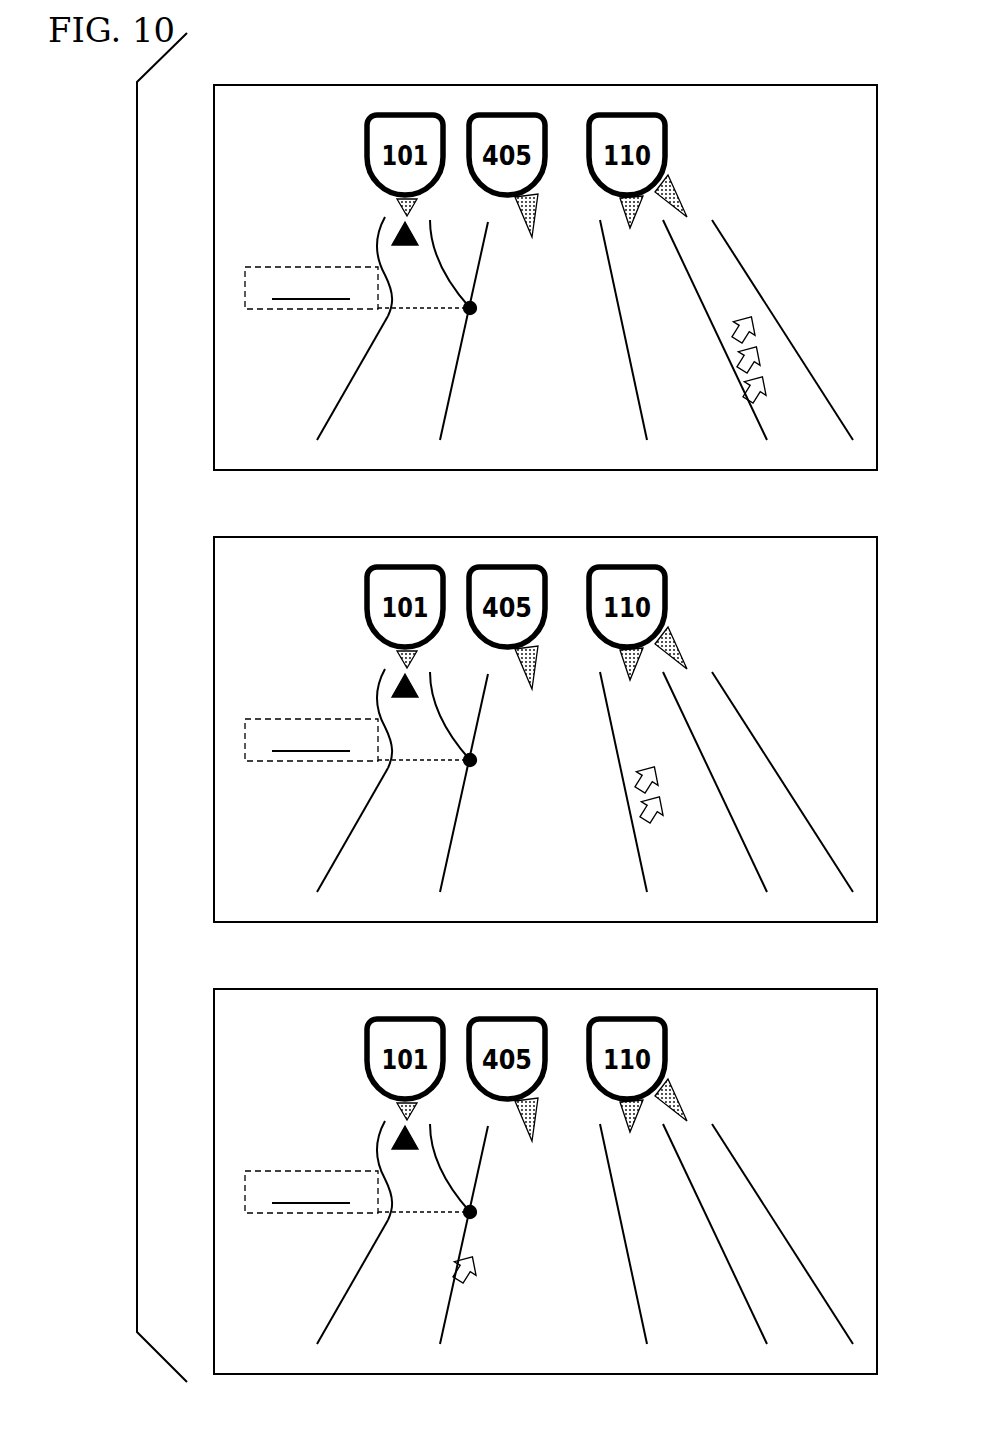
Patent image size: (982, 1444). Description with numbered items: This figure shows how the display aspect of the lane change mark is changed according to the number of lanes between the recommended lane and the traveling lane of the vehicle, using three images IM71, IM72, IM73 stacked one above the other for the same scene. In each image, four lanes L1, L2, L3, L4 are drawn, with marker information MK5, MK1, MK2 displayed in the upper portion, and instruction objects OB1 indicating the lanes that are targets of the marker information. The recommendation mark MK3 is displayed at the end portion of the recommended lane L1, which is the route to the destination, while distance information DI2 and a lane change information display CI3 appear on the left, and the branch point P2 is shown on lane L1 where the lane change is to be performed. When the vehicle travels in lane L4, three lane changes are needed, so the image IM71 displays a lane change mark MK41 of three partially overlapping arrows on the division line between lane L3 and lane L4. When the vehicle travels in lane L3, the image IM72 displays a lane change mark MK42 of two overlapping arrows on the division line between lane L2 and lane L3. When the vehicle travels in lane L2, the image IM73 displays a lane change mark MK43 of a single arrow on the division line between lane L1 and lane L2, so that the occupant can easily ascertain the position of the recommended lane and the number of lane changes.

The image IM71 is at (826, 84).
The image IM72 is at (826, 536).
The image IM73 is at (826, 988).
The marker information MK5 is at (414, 578).
The marker information MK1 is at (516, 567).
The marker information MK2 is at (638, 584).
The recommendation mark MK3 is at (358, 644).
The distance information DI2 is at (377, 708).
The remaining distance information CI3 is at (354, 766).
The branch point P2 is at (506, 760).
The instruction object OB1 is at (558, 701).
The lane change mark MK41 is at (718, 325).
The lane change mark MK42 is at (615, 778).
The lane change mark MK43 is at (483, 1250).
The lane L1 is at (357, 832).
The lane L2 is at (501, 785).
The lane L3 is at (659, 784).
The lane L4 is at (758, 784).